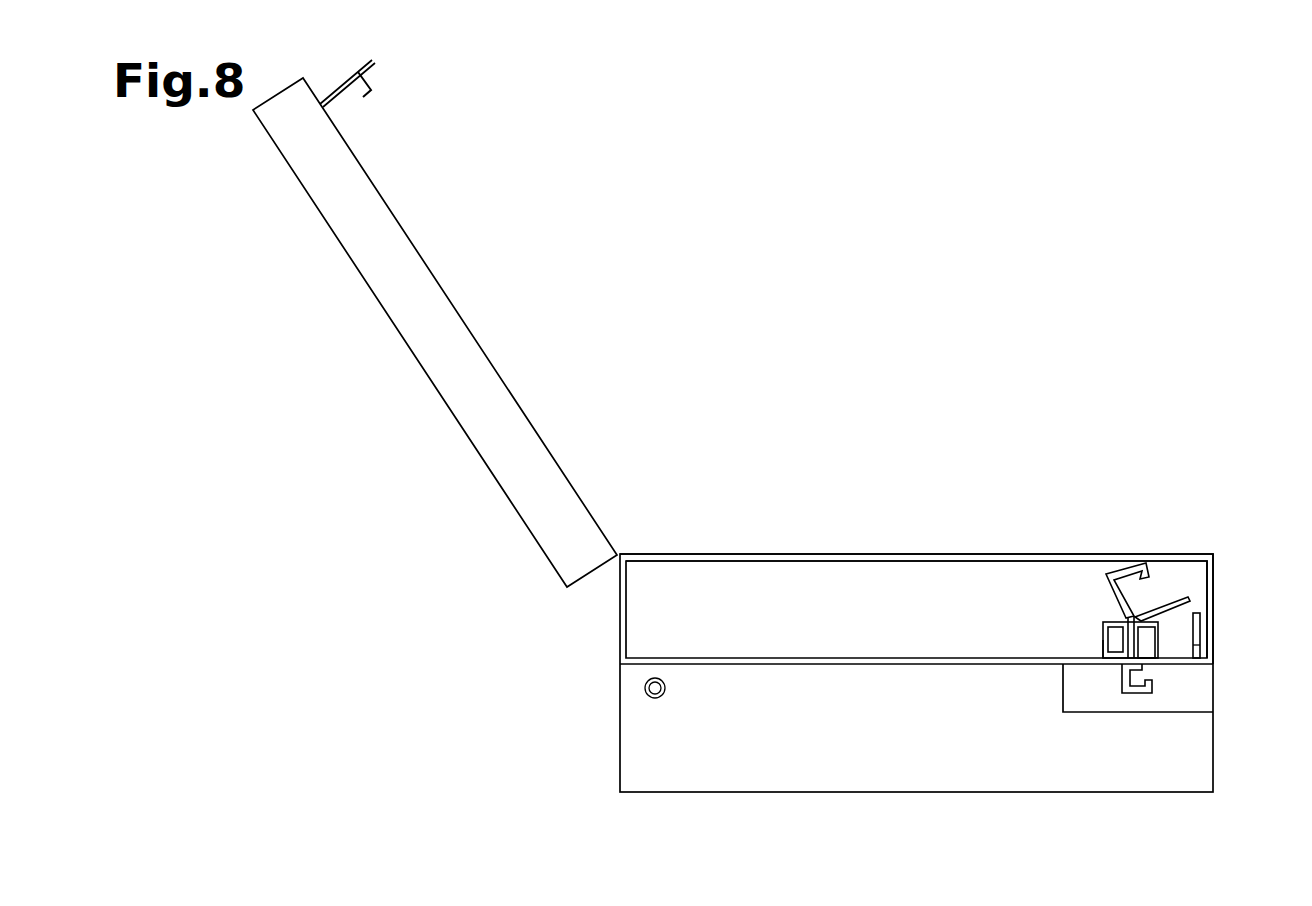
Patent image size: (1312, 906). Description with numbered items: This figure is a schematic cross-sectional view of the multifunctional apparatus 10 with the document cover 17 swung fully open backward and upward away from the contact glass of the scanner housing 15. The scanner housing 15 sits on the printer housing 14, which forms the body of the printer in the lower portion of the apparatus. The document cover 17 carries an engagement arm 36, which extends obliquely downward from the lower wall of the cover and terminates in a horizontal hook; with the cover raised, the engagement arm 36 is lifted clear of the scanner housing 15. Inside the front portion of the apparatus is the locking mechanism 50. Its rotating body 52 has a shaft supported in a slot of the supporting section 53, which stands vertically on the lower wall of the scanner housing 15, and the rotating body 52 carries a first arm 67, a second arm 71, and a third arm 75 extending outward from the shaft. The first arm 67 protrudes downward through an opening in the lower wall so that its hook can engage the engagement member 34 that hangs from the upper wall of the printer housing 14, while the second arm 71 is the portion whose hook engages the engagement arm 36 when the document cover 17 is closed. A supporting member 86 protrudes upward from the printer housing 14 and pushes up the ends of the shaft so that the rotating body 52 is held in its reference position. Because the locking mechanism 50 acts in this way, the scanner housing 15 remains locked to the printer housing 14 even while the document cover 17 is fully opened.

The multifunctional apparatus 10 is at (687, 817).
The printer housing 14 is at (1213, 752).
The scanner housing 15 is at (1213, 583).
The document cover 17 is at (410, 353).
The engagement member 34 is at (1160, 682).
The engagement arm 36 is at (374, 88).
The locking mechanism 50 is at (1083, 606).
The rotating body 52 is at (1128, 616).
The supporting section 53 is at (1160, 647).
The first arm 67 is at (1122, 680).
The second arm 71 is at (1130, 562).
The third arm 75 is at (1185, 612).
The supporting member 86 is at (1103, 643).